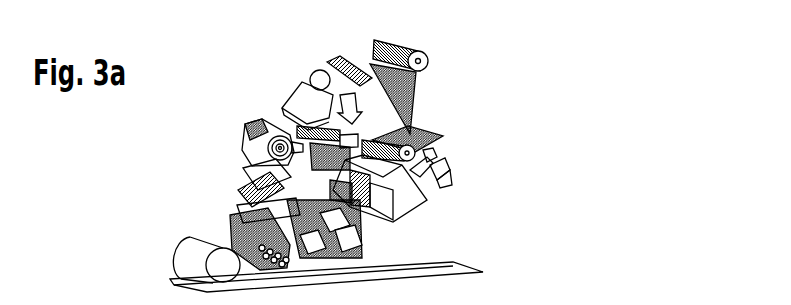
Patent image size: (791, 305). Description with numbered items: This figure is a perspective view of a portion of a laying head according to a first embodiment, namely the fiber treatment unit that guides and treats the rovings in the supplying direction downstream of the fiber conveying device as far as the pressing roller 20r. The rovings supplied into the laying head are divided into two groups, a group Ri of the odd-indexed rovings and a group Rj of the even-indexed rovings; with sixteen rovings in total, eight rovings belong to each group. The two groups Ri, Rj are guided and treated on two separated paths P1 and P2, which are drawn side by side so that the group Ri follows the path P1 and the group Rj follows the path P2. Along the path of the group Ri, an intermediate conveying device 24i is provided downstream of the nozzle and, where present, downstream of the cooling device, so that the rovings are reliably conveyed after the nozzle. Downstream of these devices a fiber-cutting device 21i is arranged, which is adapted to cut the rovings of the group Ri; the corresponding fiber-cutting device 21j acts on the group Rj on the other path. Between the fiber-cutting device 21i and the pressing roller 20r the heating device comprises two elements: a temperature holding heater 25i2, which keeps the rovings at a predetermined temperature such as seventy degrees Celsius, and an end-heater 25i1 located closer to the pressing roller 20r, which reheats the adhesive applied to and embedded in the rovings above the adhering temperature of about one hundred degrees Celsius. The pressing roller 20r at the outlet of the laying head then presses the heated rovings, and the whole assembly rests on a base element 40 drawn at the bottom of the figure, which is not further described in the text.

The base plate 40 is at (440, 262).
The pressing roller 20r is at (170, 253).
The intermediate conveying device 24i is at (250, 124).
The first path P1 is at (277, 118).
The second path P2 is at (452, 153).
The roving group Ri is at (404, 71).
The roving group Rj is at (409, 125).
The fiber-cutting device 21i is at (237, 222).
The fiber-cutting device 21j is at (327, 260).
The end-heater 25i1 is at (226, 236).
The temperature holding heater 25i2 is at (240, 236).